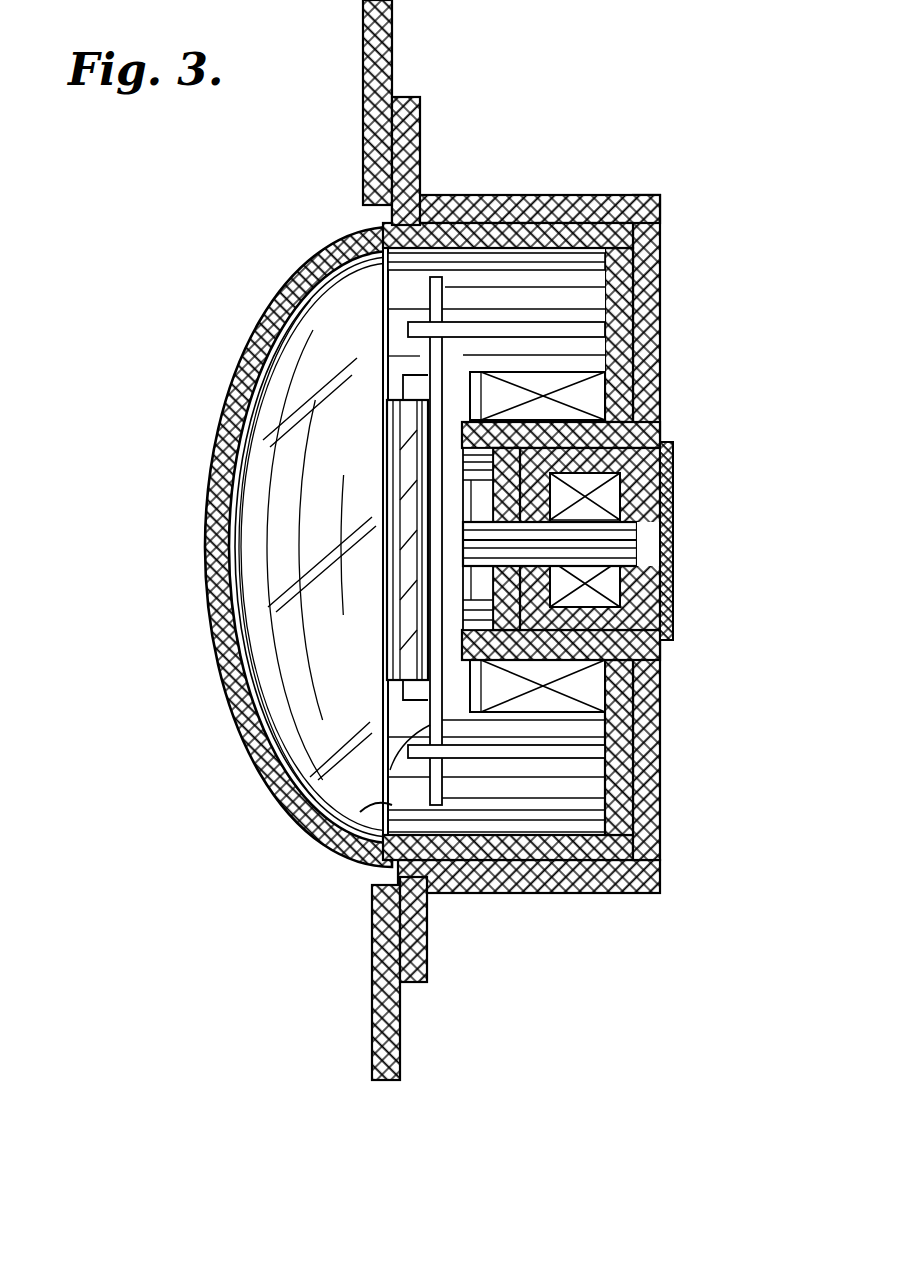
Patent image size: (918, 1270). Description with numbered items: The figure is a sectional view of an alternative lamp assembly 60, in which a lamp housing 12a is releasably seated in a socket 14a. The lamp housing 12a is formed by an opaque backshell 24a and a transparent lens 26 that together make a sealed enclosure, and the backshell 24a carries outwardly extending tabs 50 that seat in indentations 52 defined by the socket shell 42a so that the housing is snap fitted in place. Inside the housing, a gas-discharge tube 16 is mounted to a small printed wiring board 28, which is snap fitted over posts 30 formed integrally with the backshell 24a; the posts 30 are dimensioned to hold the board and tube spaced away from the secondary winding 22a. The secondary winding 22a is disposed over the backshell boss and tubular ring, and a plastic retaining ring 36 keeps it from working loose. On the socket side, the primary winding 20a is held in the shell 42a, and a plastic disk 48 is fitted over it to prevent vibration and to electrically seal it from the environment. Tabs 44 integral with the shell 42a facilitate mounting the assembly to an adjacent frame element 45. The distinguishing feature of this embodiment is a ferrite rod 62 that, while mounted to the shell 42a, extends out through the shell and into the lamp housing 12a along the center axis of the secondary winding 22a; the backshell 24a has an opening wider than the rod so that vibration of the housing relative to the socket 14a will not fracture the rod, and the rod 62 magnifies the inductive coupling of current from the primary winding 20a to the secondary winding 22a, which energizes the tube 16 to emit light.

The lamp housing 12a is at (284, 262).
The socket 14a is at (668, 222).
The gas-discharge tube 16 is at (397, 592).
The primary winding 20a is at (663, 493).
The secondary winding 22a is at (600, 385).
The backshell 24a is at (385, 807).
The lens 26 is at (255, 758).
The printed wiring board 28 is at (427, 305).
The posts 30 is at (580, 323).
The retaining ring 36 is at (467, 710).
The shell 42a is at (650, 740).
The tabs 44 is at (405, 140).
The frame element 45 is at (383, 53).
The plastic disk 48 is at (663, 600).
The tabs 50 is at (463, 207).
The indentations 52 is at (456, 216).
The lamp assembly 60 is at (158, 604).
The ferrite rod 62 is at (657, 540).